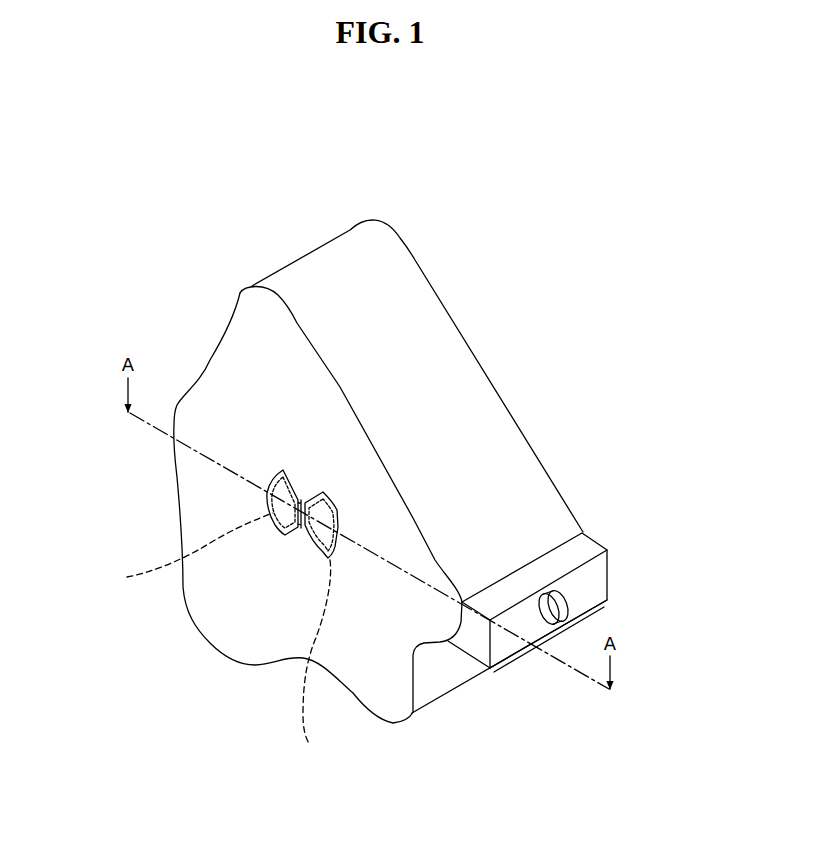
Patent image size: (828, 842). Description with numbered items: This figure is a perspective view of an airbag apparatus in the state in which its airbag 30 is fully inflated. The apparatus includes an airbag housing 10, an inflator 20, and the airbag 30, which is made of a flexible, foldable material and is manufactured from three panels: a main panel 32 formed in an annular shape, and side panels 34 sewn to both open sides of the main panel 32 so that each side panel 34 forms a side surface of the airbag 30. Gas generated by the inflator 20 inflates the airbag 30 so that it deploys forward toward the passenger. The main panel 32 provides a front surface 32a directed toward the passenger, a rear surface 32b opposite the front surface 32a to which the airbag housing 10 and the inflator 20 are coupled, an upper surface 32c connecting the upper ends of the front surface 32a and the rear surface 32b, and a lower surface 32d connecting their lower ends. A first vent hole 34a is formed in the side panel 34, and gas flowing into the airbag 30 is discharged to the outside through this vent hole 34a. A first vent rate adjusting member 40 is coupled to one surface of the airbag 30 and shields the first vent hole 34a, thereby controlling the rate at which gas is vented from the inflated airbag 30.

The airbag housing 10 is at (585, 537).
The inflator 20 is at (562, 601).
The airbag 30 is at (263, 203).
The main panel 32 is at (287, 276).
The front surface 32a is at (178, 478).
The rear surface 32b is at (456, 673).
The upper surface 32c is at (413, 350).
The lower surface 32d is at (327, 670).
The side panel 34 is at (259, 332).
The first vent hole 34a is at (216, 645).
The first vent rate adjusting member 40 is at (285, 535).